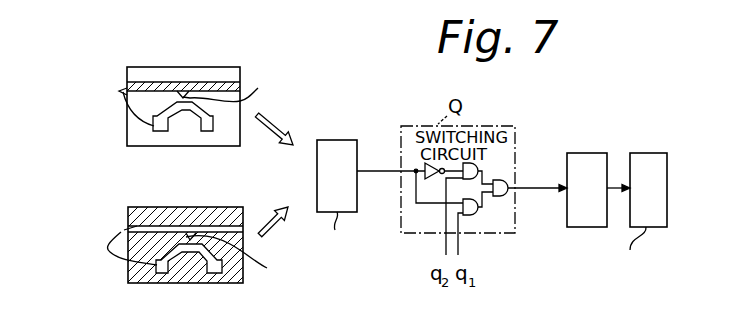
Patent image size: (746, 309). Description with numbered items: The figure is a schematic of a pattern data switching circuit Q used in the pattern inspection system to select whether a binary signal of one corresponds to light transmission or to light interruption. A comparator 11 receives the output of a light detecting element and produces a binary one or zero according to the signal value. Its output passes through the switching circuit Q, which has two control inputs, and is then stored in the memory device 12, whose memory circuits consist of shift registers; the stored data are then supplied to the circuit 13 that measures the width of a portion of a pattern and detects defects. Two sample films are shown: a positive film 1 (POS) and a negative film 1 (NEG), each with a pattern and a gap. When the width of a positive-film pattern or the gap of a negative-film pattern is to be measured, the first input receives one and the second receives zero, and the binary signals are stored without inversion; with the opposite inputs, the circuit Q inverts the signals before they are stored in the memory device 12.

The photo-mask 1 is at (167, 155).
The comparator 11 is at (341, 140).
The memory device 12 is at (586, 153).
The width measuring and defect detecting circuit 13 is at (645, 153).